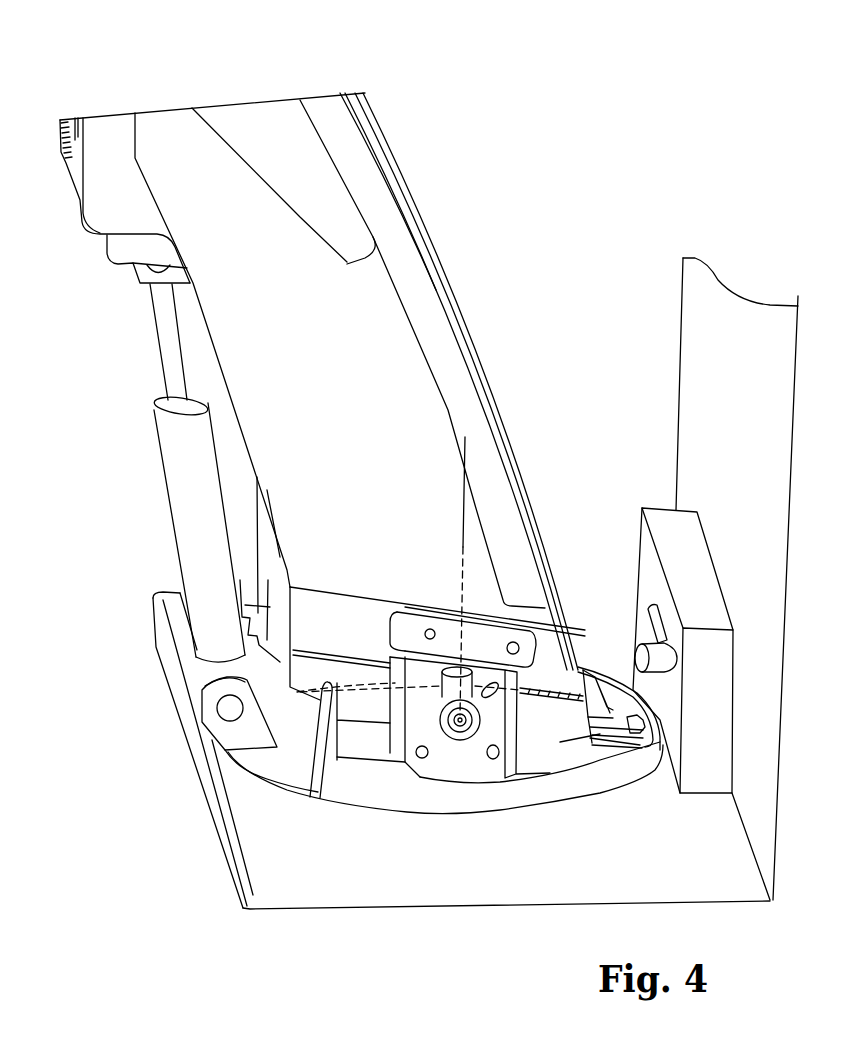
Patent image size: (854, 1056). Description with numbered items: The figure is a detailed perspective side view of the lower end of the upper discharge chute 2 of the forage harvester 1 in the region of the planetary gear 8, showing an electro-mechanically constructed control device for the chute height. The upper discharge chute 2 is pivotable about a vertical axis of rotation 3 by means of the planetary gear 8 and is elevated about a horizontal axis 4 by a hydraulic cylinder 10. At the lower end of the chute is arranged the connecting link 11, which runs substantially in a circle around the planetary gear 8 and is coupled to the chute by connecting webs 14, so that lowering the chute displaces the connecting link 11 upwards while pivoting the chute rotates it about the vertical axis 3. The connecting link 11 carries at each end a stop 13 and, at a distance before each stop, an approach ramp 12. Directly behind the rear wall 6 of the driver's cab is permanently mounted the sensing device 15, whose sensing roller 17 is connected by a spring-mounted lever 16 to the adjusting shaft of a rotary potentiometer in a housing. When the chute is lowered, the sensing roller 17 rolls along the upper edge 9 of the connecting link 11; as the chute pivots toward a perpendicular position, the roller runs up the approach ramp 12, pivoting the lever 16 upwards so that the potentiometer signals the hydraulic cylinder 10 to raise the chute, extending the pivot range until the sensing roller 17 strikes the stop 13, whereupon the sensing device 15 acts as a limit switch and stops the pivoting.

The harvesting machine 1 is at (258, 873).
The upper discharge chute 2 is at (392, 217).
The vertical axis of rotation 3 is at (465, 513).
The horizontal axis 4 is at (458, 718).
The rear wall 6 is at (698, 302).
The planetary gear 8 is at (240, 770).
The upper edge 9 is at (582, 780).
The hydraulic cylinder 10 is at (172, 483).
The connecting link 11 is at (608, 782).
The approach ramp 12 is at (427, 780).
The stop 13 is at (310, 760).
The connecting web 14 is at (627, 732).
The sensing device 15 is at (702, 450).
The lever 16 is at (658, 620).
The sensing roller 17 is at (645, 647).